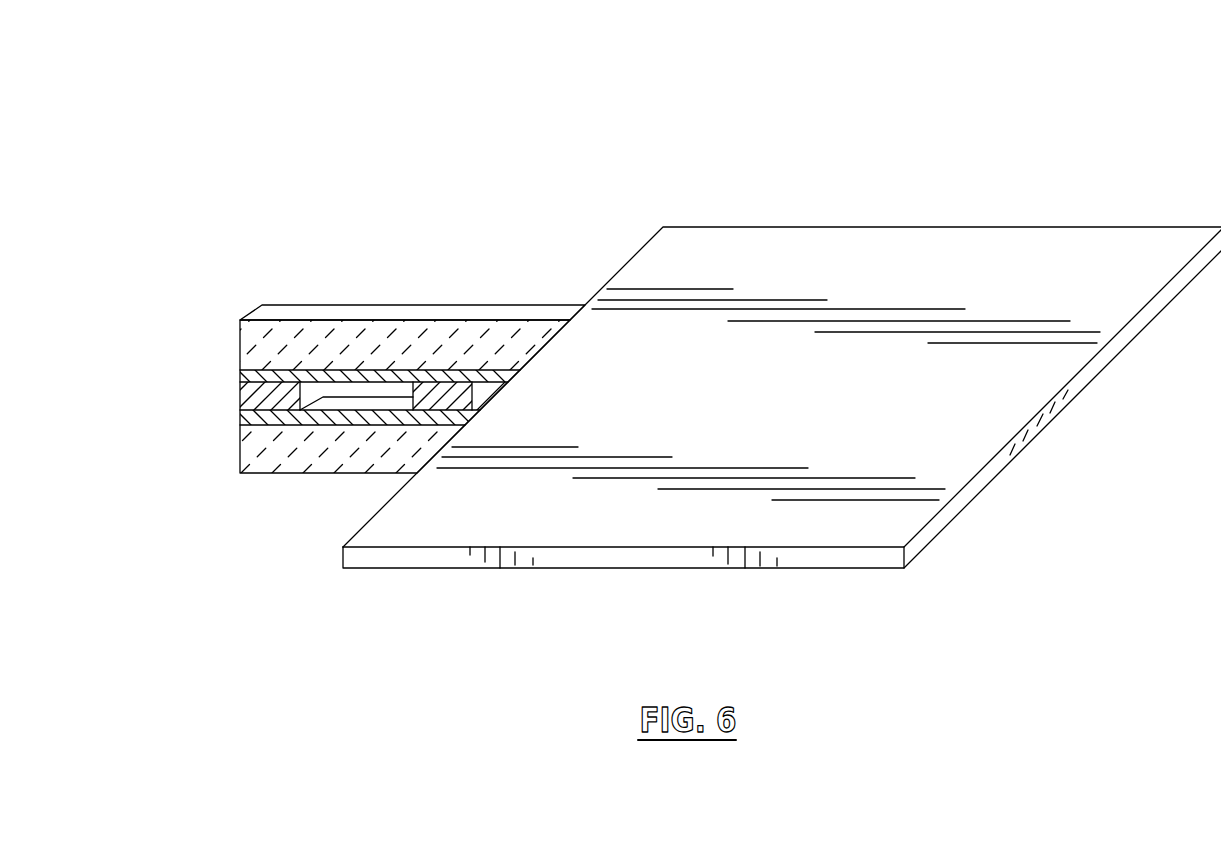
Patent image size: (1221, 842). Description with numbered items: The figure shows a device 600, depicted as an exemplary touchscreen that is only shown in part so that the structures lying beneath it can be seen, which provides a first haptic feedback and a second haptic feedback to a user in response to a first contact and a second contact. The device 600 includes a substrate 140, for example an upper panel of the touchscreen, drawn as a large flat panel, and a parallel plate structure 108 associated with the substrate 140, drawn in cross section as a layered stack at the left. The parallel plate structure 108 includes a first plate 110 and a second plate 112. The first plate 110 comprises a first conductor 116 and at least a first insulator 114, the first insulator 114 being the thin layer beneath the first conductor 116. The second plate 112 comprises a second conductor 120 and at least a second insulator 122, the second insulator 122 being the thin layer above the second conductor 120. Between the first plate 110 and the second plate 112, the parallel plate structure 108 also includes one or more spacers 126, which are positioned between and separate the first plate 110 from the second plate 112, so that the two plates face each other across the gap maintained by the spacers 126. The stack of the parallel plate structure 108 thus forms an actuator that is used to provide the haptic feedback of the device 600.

The device 600 is at (360, 168).
The parallel plate structure 108 is at (311, 387).
The first plate 110 is at (361, 310).
The second plate 112 is at (303, 469).
The first insulator 114 is at (282, 372).
The first conductor 116 is at (316, 358).
The second conductor 120 is at (266, 462).
The second insulator 122 is at (362, 418).
The spacer 126 is at (452, 398).
The substrate 140 is at (938, 258).